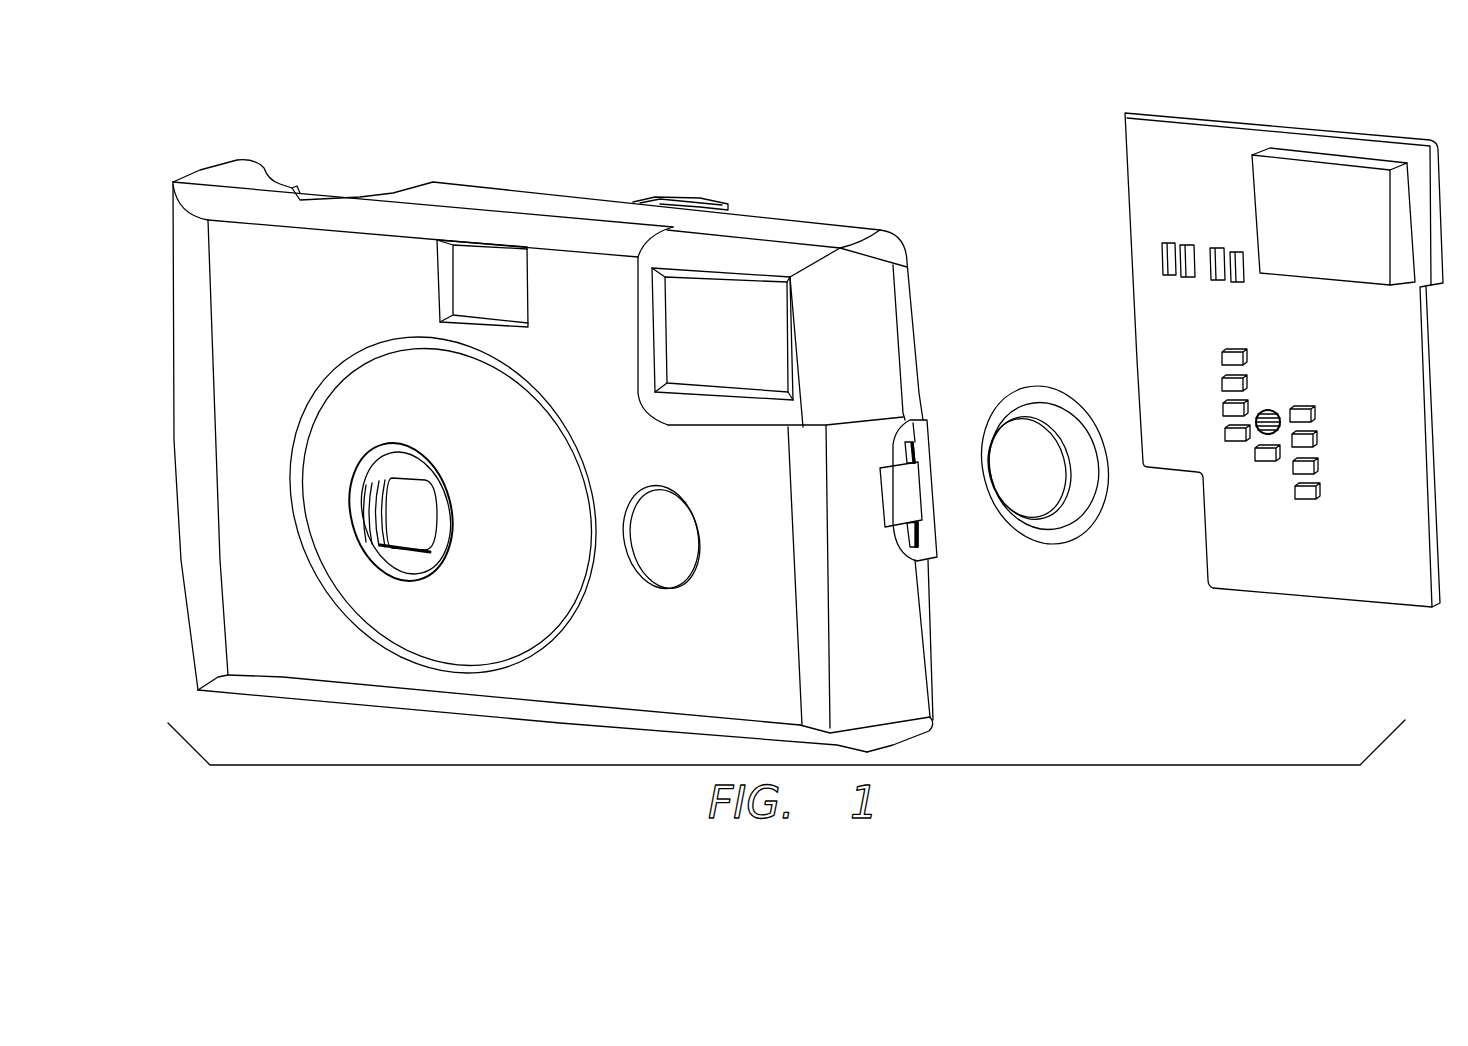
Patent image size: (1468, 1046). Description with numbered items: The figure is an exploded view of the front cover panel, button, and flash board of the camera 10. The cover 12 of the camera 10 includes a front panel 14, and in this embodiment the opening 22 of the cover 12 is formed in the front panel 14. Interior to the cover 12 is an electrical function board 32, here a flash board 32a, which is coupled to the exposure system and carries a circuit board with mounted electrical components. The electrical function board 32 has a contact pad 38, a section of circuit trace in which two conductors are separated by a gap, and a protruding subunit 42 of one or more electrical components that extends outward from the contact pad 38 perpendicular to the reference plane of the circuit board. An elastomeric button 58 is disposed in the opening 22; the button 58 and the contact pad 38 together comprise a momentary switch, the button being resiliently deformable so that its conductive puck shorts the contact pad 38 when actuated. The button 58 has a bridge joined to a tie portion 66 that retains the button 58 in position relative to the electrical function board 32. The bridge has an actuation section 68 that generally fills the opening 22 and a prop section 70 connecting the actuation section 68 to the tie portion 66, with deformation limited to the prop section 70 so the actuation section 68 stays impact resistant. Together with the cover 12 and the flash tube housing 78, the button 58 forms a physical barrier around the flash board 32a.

The camera 10 is at (708, 148).
The cover 12 is at (520, 410).
The front panel 14 is at (246, 165).
The opening 22 is at (680, 525).
The electrical function board 32 is at (1291, 368).
The flash board 32a is at (1435, 545).
The contact pad 38 is at (1272, 402).
The protruding subunit 42 is at (1273, 474).
The elastomeric button 58 is at (1073, 537).
The tie portion 66 is at (1087, 413).
The actuation section 68 is at (1012, 457).
The prop section 70 is at (1037, 410).
The flash tube housing 78 is at (1358, 155).